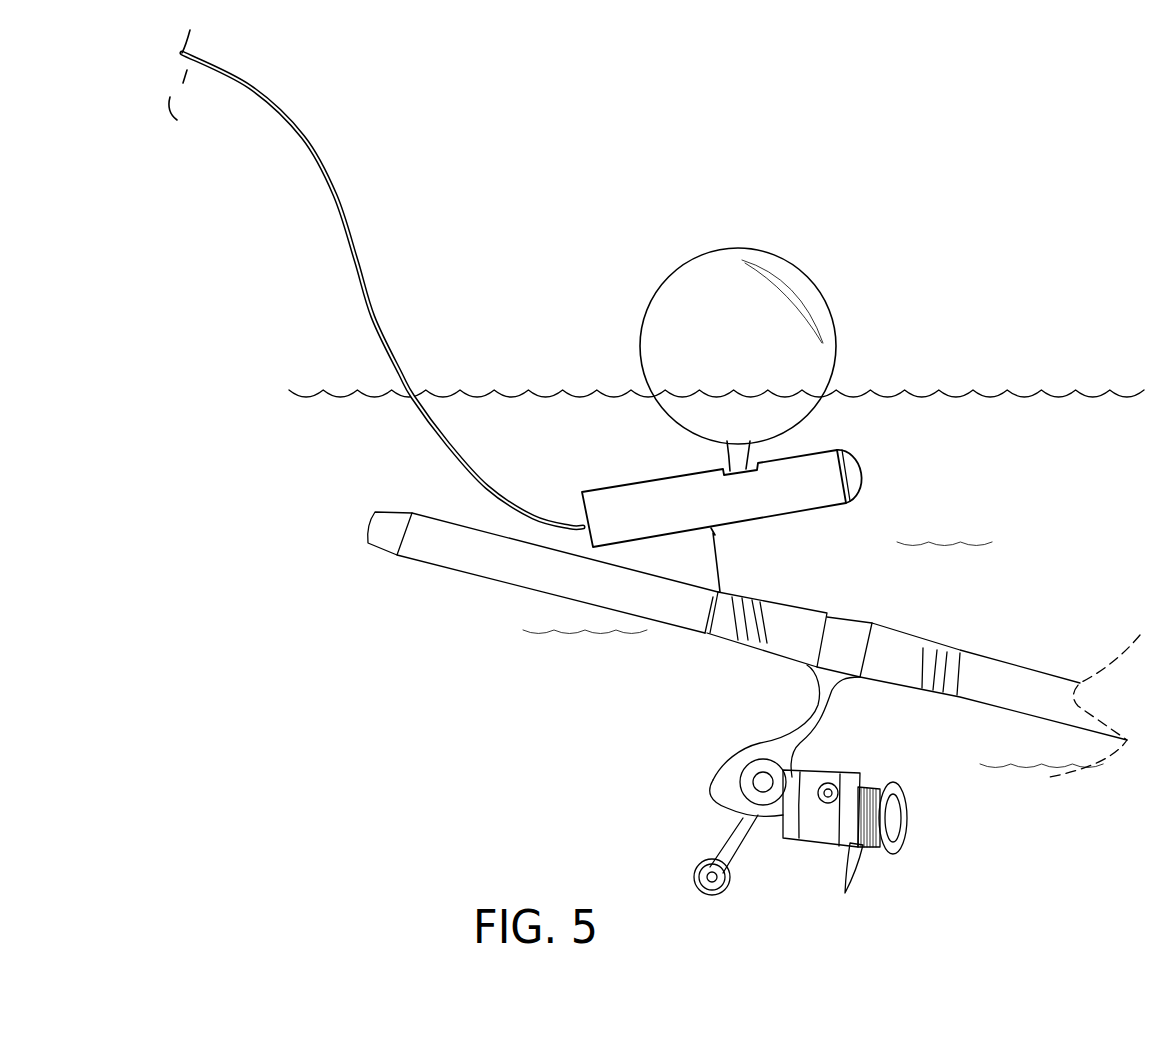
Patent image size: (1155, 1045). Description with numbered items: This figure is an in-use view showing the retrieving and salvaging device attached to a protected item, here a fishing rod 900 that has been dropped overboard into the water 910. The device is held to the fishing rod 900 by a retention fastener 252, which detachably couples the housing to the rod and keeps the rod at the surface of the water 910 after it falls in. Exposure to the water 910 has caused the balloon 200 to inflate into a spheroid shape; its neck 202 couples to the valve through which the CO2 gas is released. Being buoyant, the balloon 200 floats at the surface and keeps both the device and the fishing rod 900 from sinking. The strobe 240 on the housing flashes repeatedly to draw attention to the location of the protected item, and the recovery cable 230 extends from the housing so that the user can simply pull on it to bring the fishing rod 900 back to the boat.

The balloon 200 is at (750, 250).
The neck 202 is at (733, 458).
The recovery cable 230 is at (337, 193).
The strobe 240 is at (862, 475).
The retention fastener 252 is at (721, 557).
The fishing rod 900 is at (497, 580).
The water 910 is at (1030, 397).